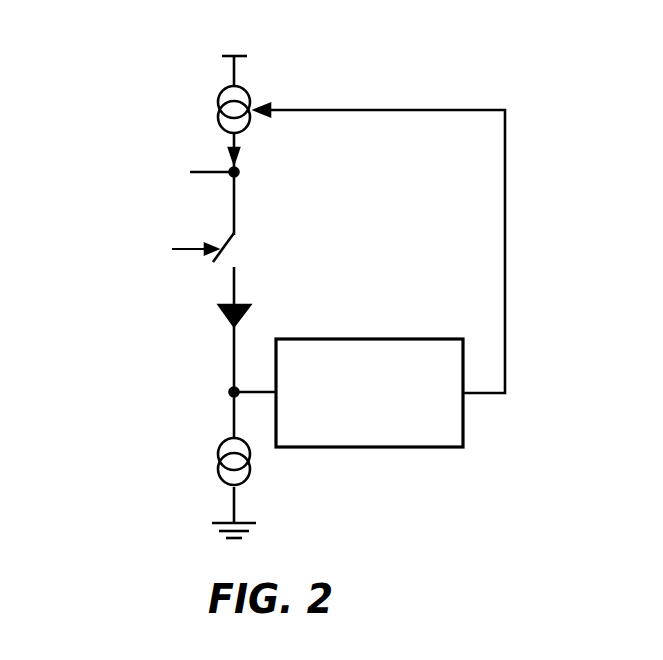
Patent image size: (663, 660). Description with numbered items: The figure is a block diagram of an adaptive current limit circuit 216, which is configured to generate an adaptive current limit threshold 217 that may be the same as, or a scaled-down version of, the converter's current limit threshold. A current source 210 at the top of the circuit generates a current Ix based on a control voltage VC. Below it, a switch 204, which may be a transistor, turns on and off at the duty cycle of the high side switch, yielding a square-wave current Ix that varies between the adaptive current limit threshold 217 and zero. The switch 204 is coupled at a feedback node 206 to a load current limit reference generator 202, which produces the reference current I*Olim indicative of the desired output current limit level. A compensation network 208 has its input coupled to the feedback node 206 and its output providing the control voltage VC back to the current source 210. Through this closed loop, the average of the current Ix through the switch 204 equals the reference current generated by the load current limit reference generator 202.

The adaptive current limit circuit 216 is at (166, 52).
The current source 210 is at (247, 92).
The adaptive current limit threshold 217 is at (132, 172).
The switch 204 is at (237, 251).
The feedback node 206 is at (231, 396).
The compensation network 208 is at (388, 437).
The load current limit reference generator 202 is at (252, 470).